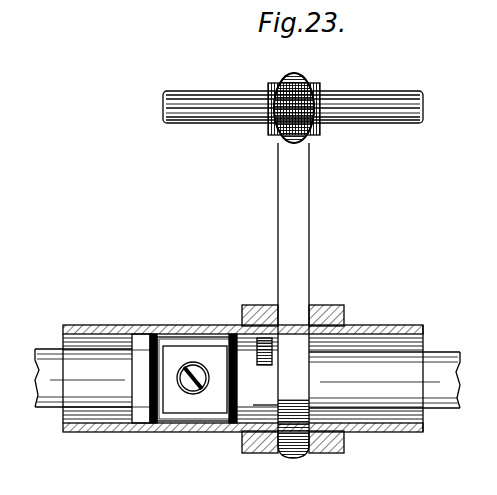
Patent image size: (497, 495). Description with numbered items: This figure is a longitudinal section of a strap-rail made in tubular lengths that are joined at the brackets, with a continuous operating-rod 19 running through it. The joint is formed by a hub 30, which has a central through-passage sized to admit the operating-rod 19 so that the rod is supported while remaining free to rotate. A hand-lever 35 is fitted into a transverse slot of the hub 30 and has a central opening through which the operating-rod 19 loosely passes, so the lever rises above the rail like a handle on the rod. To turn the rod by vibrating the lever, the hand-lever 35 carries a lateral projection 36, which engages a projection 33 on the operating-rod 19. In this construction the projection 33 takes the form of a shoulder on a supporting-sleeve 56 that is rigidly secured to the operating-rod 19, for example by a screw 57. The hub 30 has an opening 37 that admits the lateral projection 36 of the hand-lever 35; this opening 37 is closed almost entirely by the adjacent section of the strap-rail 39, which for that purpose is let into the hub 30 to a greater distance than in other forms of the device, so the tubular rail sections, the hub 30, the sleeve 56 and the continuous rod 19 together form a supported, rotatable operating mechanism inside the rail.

The operating-rod 19 is at (448, 390).
The hub 30 is at (331, 312).
The projection 33 is at (269, 362).
The hand-lever 35 is at (298, 220).
The lateral projection 36 is at (237, 328).
The opening 37 is at (263, 312).
The strap-rail 39 is at (137, 325).
The supporting-sleeve 56 is at (261, 430).
The screw 57 is at (191, 388).